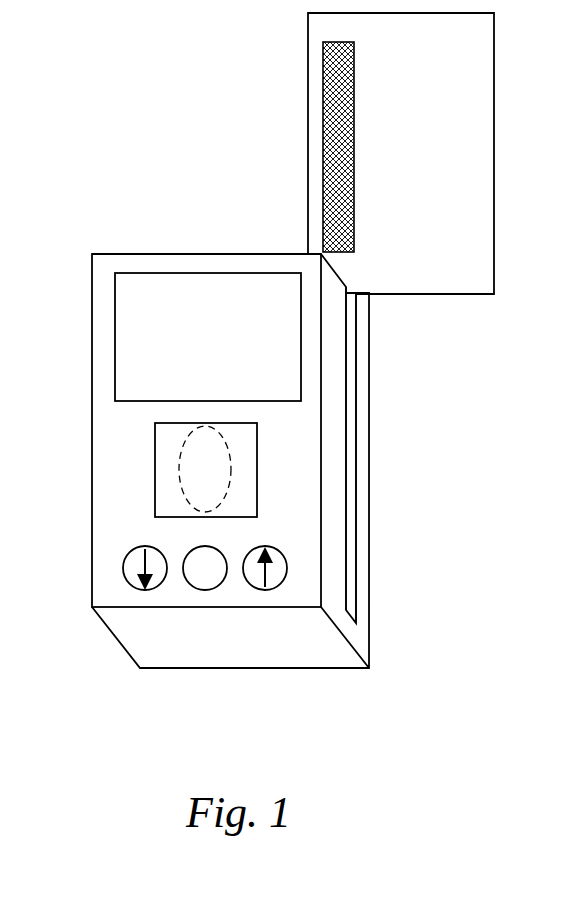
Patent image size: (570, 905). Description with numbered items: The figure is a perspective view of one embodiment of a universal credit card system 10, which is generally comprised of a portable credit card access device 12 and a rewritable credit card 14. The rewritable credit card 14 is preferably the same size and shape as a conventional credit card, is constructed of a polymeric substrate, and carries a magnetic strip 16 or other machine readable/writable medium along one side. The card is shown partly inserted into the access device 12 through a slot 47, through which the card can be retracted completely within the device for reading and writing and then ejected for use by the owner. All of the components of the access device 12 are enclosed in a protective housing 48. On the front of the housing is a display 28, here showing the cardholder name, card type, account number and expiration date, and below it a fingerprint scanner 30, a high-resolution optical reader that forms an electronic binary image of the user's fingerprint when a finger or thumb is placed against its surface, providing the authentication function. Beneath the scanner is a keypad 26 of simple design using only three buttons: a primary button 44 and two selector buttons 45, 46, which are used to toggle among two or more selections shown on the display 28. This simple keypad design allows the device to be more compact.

The universal credit card system 10 is at (186, 135).
The portable credit card access device 12 is at (372, 592).
The rewritable credit card 14 is at (507, 141).
The magnetic strip 16 is at (355, 107).
The keypad 26 is at (198, 626).
The display 28 is at (115, 350).
The fingerprint scanner 30 is at (155, 478).
The primary button 44 is at (199, 590).
The selector button 45 is at (138, 590).
The selector button 46 is at (287, 568).
The slot 47 is at (353, 435).
The protective housing 48 is at (152, 254).